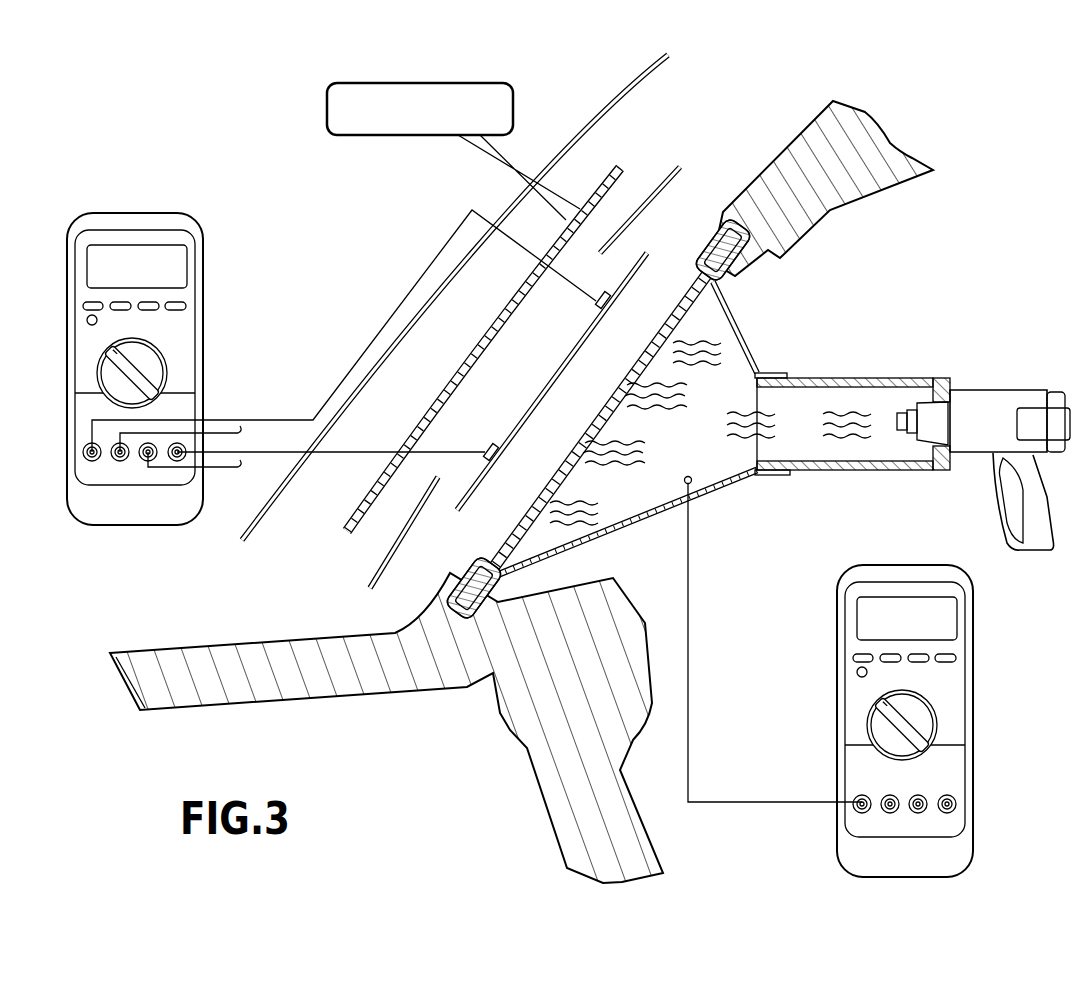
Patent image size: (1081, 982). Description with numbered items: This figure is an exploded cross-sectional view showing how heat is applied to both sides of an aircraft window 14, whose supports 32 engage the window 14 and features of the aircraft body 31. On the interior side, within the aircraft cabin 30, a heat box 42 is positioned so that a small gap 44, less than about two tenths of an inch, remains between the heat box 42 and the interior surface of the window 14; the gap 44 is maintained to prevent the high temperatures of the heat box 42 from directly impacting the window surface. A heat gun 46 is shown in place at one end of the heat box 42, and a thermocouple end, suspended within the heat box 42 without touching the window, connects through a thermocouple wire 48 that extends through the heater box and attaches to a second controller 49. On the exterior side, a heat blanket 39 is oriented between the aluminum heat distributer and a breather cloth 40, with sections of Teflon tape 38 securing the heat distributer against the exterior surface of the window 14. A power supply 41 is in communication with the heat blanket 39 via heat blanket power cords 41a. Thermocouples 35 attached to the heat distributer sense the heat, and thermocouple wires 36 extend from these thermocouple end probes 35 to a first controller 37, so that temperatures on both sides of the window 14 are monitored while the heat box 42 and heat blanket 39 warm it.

The window 14 is at (647, 327).
The aircraft cabin 30 is at (944, 106).
The aircraft body 31 is at (775, 159).
The window supports 32 is at (732, 220).
The thermocouples 35 is at (594, 306).
The thermocouple wires 36 is at (408, 298).
The first controller 37 is at (202, 307).
The sections of Teflon tape 38 is at (652, 195).
The heat blanket 39 is at (607, 168).
The breather cloth 40 is at (570, 137).
The power supply 41 is at (435, 84).
The heat blanket power cords 41a is at (484, 170).
The heat box 42 is at (840, 378).
The gap 44 is at (533, 523).
The heat gun 46 is at (1007, 390).
The thermocouple wire 48 is at (760, 800).
The second controller 49 is at (837, 693).